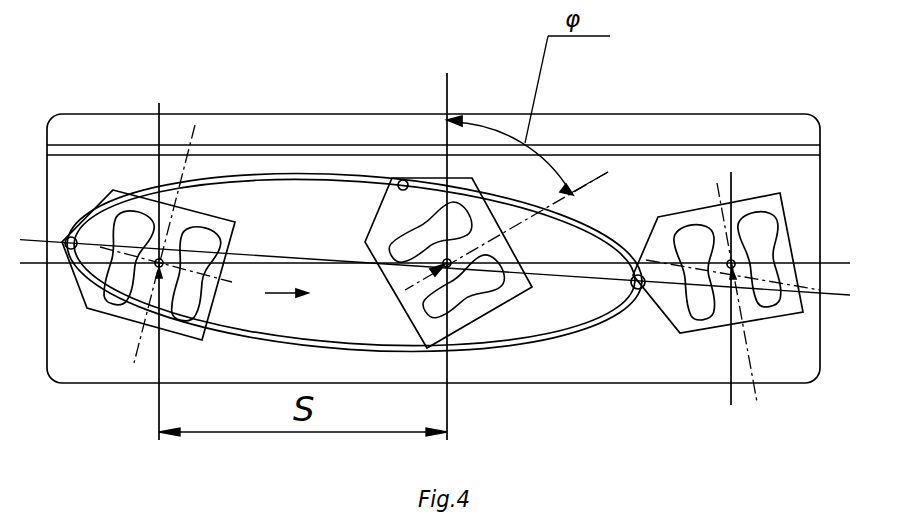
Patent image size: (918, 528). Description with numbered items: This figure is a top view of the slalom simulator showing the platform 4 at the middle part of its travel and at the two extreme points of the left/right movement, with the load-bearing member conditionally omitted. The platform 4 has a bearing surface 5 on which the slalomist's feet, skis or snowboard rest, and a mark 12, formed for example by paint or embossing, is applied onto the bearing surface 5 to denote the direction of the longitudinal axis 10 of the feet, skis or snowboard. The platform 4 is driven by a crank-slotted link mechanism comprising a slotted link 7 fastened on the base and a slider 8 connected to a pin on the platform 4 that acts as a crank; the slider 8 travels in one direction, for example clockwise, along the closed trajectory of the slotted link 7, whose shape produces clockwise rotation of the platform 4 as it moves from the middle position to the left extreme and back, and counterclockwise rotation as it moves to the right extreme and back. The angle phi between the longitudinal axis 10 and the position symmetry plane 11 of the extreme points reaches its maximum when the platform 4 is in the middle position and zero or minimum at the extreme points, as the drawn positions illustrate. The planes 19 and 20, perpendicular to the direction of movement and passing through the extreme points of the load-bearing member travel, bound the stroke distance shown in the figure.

The platform 4 is at (395, 250).
The bearing surface 5 is at (388, 247).
The slotted link 7 is at (258, 182).
The slider 8 is at (403, 180).
The longitudinal axis 10 is at (597, 177).
The position symmetry plane 11 is at (448, 98).
The mark 12 is at (418, 280).
The plane 19 is at (157, 133).
The plane 20 is at (732, 352).